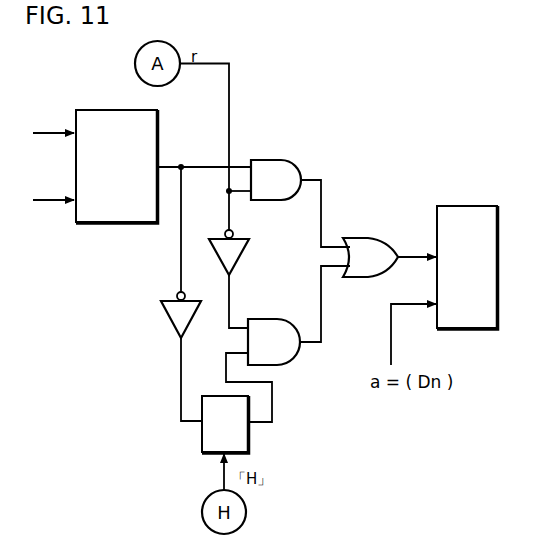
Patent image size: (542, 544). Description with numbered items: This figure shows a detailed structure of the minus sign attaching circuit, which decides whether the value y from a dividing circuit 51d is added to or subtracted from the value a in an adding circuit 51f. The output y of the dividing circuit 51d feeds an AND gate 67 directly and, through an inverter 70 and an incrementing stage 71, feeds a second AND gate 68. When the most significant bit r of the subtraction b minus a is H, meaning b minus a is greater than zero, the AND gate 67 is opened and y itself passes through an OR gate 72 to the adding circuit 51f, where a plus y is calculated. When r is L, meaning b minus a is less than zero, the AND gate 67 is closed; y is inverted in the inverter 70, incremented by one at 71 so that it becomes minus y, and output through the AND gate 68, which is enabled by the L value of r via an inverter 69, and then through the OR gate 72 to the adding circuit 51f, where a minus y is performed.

The dividing circuit 51d is at (108, 223).
The adding circuit 51f is at (470, 208).
The AND gate 67 is at (281, 162).
The AND gate 68 is at (270, 325).
The inverter 69 is at (238, 251).
The inverter 70 is at (168, 310).
The incrementing circuit 71 is at (243, 443).
The OR gate 72 is at (373, 237).